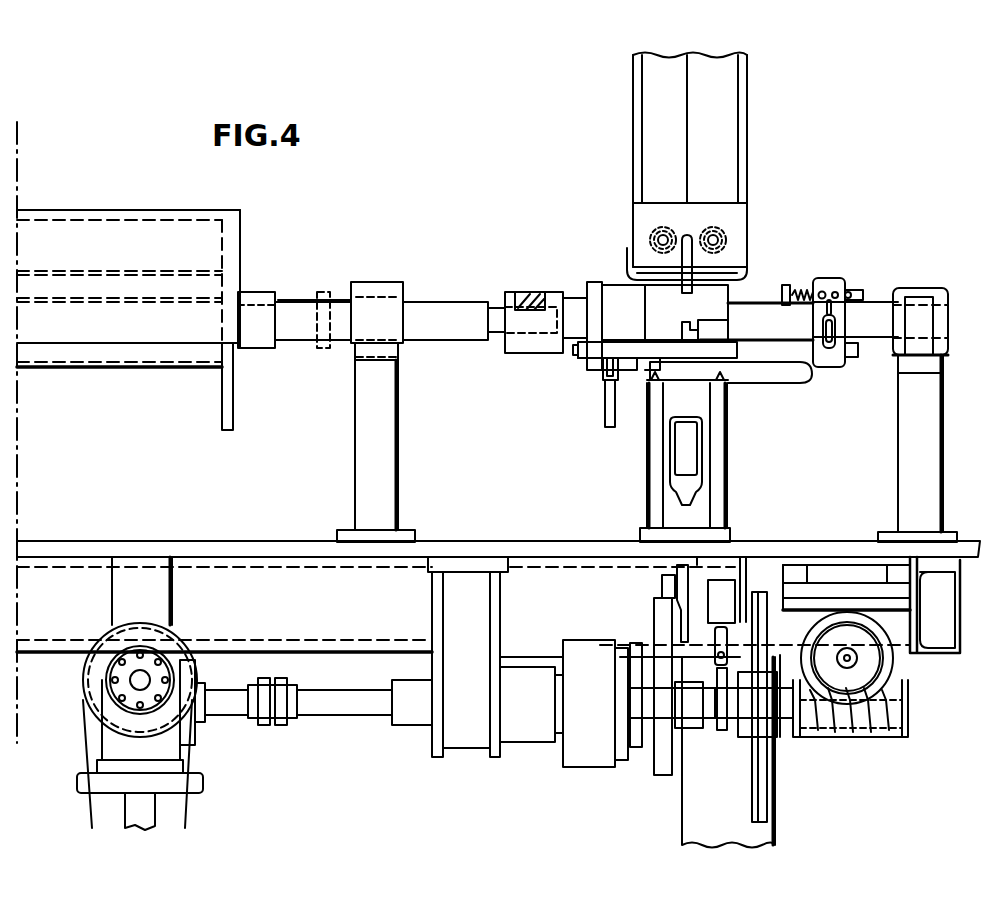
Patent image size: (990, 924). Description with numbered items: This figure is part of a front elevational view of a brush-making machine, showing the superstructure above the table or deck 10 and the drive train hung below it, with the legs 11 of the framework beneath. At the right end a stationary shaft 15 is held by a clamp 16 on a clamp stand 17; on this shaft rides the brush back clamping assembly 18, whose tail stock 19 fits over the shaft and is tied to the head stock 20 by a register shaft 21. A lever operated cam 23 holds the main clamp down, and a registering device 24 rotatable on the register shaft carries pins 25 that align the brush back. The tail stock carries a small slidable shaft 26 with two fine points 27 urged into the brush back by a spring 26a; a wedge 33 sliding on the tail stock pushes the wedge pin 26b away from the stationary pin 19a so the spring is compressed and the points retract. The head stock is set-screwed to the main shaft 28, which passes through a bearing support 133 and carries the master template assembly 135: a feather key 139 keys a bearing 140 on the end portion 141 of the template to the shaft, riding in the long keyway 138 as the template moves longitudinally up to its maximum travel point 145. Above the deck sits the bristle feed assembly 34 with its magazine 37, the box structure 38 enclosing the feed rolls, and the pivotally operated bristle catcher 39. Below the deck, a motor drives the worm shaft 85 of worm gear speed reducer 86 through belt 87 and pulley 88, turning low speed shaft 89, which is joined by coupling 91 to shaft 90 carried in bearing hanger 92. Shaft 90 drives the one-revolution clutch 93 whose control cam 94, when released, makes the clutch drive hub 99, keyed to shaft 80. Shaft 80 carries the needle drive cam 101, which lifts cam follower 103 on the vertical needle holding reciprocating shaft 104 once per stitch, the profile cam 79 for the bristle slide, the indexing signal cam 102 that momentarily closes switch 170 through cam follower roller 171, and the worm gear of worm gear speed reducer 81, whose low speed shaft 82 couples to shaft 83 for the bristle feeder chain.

The table or deck 10 is at (452, 549).
The legs 11 is at (770, 790).
The stationary shaft 15 is at (868, 330).
The clamp 16 is at (925, 293).
The clamp stand 17 is at (925, 452).
The clamping assembly 18 is at (575, 390).
The tail stock 19 is at (845, 367).
The stationary pin 19a is at (826, 290).
The head stock 20 is at (595, 285).
The register shaft 21 is at (575, 350).
The lever operated cam 23 is at (606, 407).
The registering device 24 is at (795, 368).
The pins 25 is at (659, 380).
The small slidable shaft 26 is at (896, 290).
The spring 26a is at (804, 288).
The wedge pin 26b is at (838, 296).
The fine points 27 is at (784, 285).
The main shaft 28 is at (505, 292).
The wedge 33 is at (838, 322).
The bristle feed assembly 34 is at (760, 174).
The magazine 37 is at (640, 150).
The box structure 38 is at (735, 238).
The bristle catcher 39 is at (748, 265).
The profile cam 79 is at (660, 772).
The shaft 80 is at (735, 718).
The worm gear speed reducer 81 is at (890, 665).
The low speed shaft 82 is at (196, 733).
The shaft 83 is at (172, 603).
The worm shaft 85 is at (135, 682).
The worm gear speed reducer 86 is at (162, 728).
The belt 87 is at (86, 742).
The pulley 88 is at (106, 636).
The low speed shaft 89 is at (215, 697).
The shaft 90 is at (320, 697).
The coupling 91 is at (273, 684).
The bearing hanger 92 is at (436, 715).
The one-revolution clutch 93 is at (573, 757).
The control cam 94 is at (622, 757).
The clutch hub 99 is at (633, 641).
The needle drive cam 101 is at (684, 780).
The indexing signal cam 102 is at (722, 735).
The cam follower 103 is at (660, 583).
The vertical needle holding reciprocating shaft 104 is at (697, 566).
The bearing support 133 is at (375, 285).
The master template assembly 135 is at (130, 205).
The keyway 138 is at (117, 300).
The feather key 139 is at (255, 298).
The bearing 140 is at (240, 290).
The end portion 141 is at (240, 218).
The point of maximum longitudinal travel 145 is at (322, 290).
The switch 170 is at (728, 600).
The cam follower roller 171 is at (715, 653).